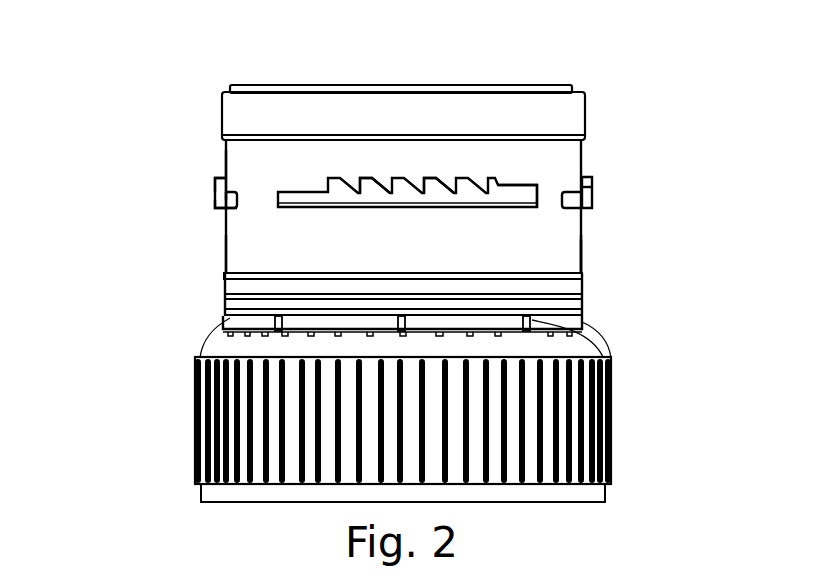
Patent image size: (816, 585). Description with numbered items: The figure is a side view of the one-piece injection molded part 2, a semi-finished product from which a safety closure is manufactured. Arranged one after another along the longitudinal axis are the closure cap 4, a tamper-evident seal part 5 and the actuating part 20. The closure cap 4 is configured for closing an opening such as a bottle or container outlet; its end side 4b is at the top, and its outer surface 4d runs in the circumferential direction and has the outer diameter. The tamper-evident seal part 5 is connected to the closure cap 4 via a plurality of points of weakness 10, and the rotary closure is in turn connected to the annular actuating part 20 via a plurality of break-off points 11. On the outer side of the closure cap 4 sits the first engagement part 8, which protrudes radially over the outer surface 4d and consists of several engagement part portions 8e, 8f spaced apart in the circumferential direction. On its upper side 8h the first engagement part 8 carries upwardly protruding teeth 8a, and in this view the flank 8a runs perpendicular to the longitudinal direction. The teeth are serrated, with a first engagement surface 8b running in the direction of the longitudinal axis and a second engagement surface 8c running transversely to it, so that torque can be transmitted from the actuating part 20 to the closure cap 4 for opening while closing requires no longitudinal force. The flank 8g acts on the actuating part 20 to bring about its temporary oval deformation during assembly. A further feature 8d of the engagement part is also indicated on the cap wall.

The injection molded part 2 is at (613, 80).
The closure cap 4 is at (582, 160).
The end side 4b is at (502, 82).
The outer surface 4d is at (582, 262).
The tamper-evident seal part 5 is at (580, 300).
The first engagement part 8 is at (218, 196).
The teeth 8a is at (293, 192).
The first engagement surface 8b is at (507, 183).
The second engagement surface 8c is at (423, 180).
The wall of latching element 8d is at (217, 173).
The engagement part portion 8e is at (365, 178).
The engagement part portion 8f is at (585, 198).
The flank 8g is at (220, 212).
The upper side 8h is at (220, 178).
The points of weakness 10 is at (267, 280).
The break-off points 11 is at (398, 325).
The actuating part 20 is at (602, 437).